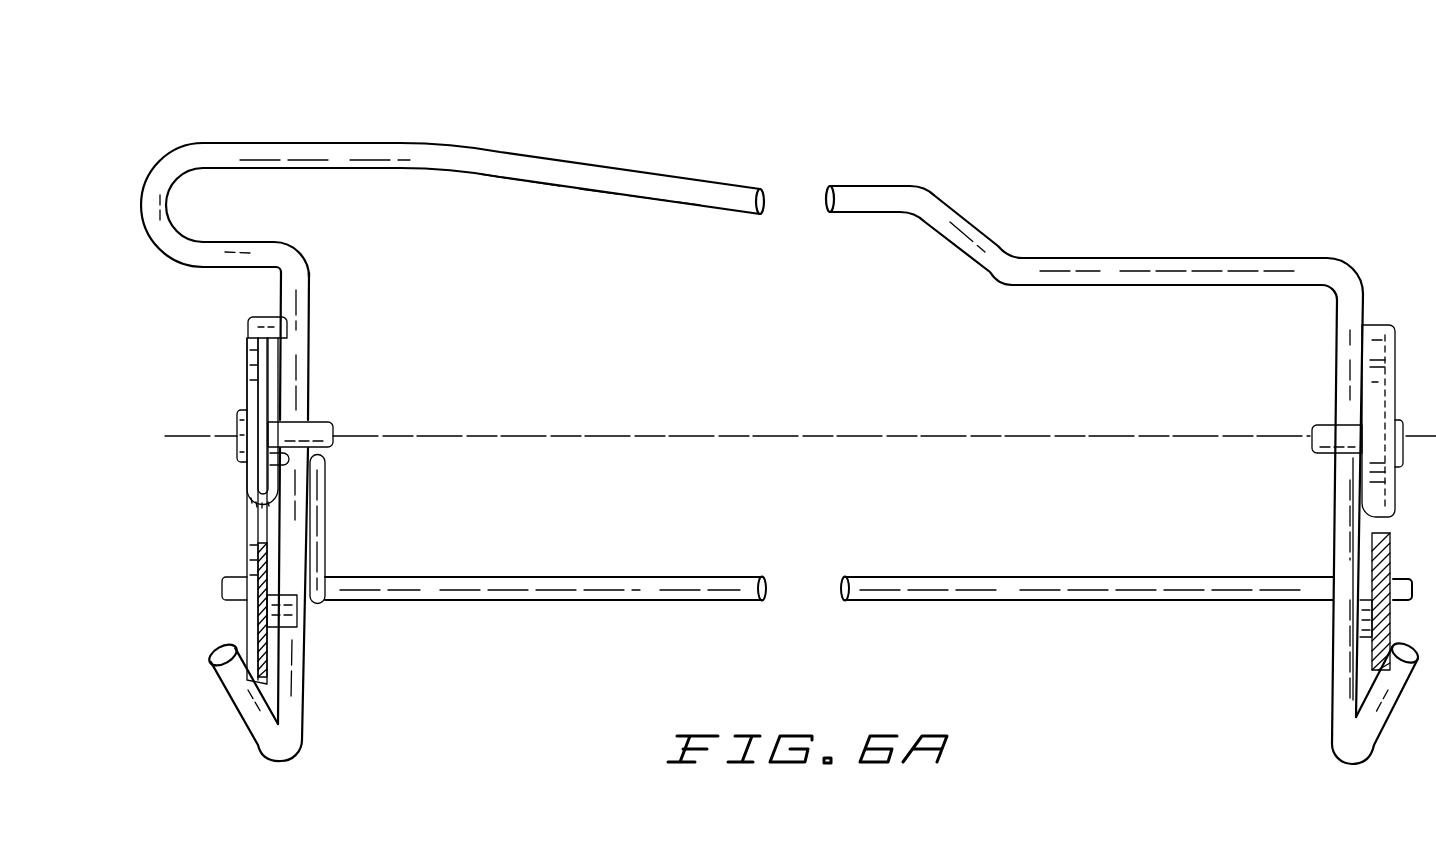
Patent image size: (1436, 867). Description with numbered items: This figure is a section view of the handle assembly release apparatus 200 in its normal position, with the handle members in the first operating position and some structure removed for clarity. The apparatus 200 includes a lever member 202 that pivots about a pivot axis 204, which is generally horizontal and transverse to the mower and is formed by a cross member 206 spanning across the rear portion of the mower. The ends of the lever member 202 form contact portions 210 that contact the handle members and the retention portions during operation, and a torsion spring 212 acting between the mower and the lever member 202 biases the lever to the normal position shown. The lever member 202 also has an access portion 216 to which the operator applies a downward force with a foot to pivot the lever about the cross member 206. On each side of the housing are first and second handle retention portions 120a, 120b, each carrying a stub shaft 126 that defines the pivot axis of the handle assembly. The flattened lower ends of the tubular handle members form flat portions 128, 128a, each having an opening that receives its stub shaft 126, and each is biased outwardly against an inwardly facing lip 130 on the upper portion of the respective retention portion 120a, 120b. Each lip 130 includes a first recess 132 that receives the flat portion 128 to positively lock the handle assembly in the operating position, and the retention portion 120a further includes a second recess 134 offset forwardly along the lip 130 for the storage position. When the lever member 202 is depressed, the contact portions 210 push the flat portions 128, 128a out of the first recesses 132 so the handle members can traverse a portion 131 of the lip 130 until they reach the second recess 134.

The handle assembly release apparatus 200 is at (780, 406).
The lever member 202 is at (582, 163).
The pivot axis 204 is at (720, 436).
The cross member 206 is at (527, 600).
The contact portion 210 is at (228, 690).
The torsion spring 212 is at (322, 545).
The access portion 216 is at (140, 185).
The first handle retention portion 120a is at (764, 500).
The second handle retention portion 120b is at (1310, 512).
The stub shaft 126 is at (328, 422).
The flat portion 128 is at (1375, 652).
The flat portion 128a is at (255, 640).
The lip 130 is at (298, 618).
The portion of the lip 131 is at (280, 497).
The first recess 132 is at (250, 508).
The second recess 134 is at (263, 398).